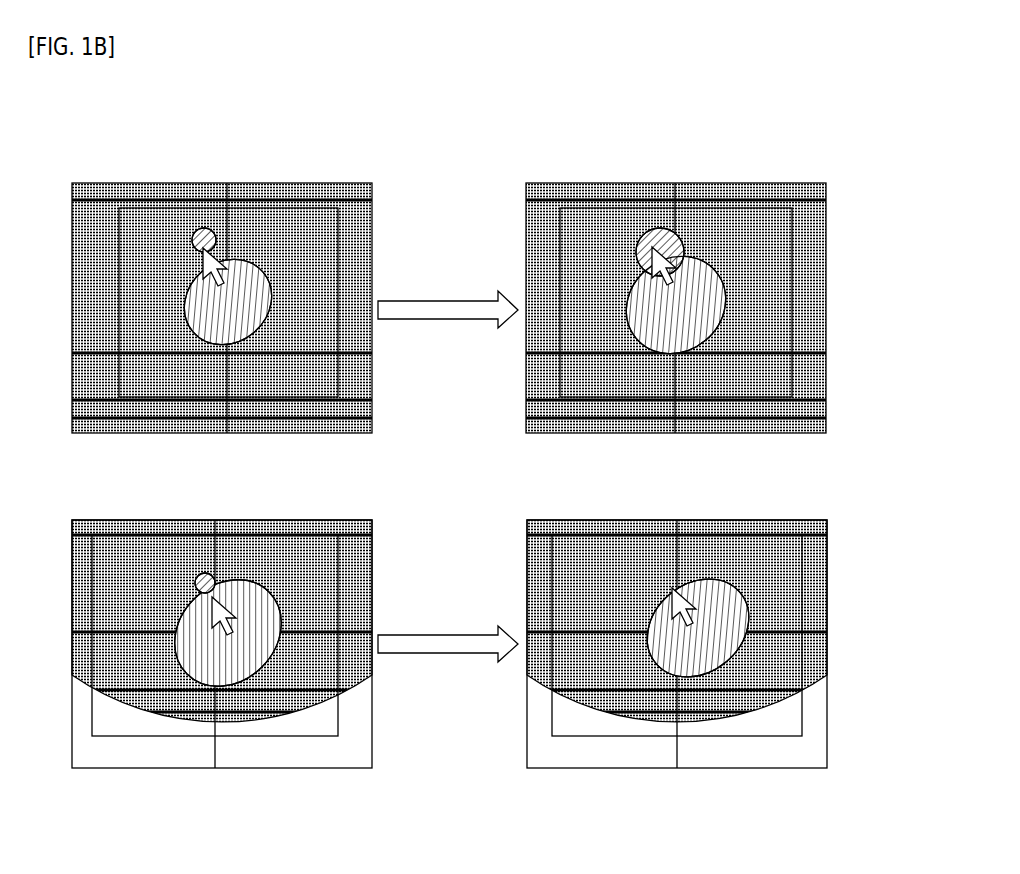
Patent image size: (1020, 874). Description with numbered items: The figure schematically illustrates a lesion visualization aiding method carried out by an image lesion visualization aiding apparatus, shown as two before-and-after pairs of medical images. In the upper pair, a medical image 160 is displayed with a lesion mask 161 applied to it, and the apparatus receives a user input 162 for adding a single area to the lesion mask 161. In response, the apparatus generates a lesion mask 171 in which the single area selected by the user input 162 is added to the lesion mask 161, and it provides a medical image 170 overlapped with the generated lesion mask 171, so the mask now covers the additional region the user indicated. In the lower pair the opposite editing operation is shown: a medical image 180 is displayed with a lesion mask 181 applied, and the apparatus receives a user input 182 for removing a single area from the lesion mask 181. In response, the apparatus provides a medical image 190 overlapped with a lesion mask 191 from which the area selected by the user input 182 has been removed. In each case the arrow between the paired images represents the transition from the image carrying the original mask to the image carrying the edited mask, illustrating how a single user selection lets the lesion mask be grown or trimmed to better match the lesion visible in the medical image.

The medical image 160 is at (253, 184).
The lesion mask 161 is at (262, 283).
The user input 162 is at (203, 228).
The medical image 170 is at (710, 184).
The lesion mask 171 is at (725, 282).
The medical image 180 is at (253, 520).
The lesion mask 181 is at (262, 607).
The user input 182 is at (204, 580).
The medical image 190 is at (710, 520).
The lesion mask 191 is at (742, 607).